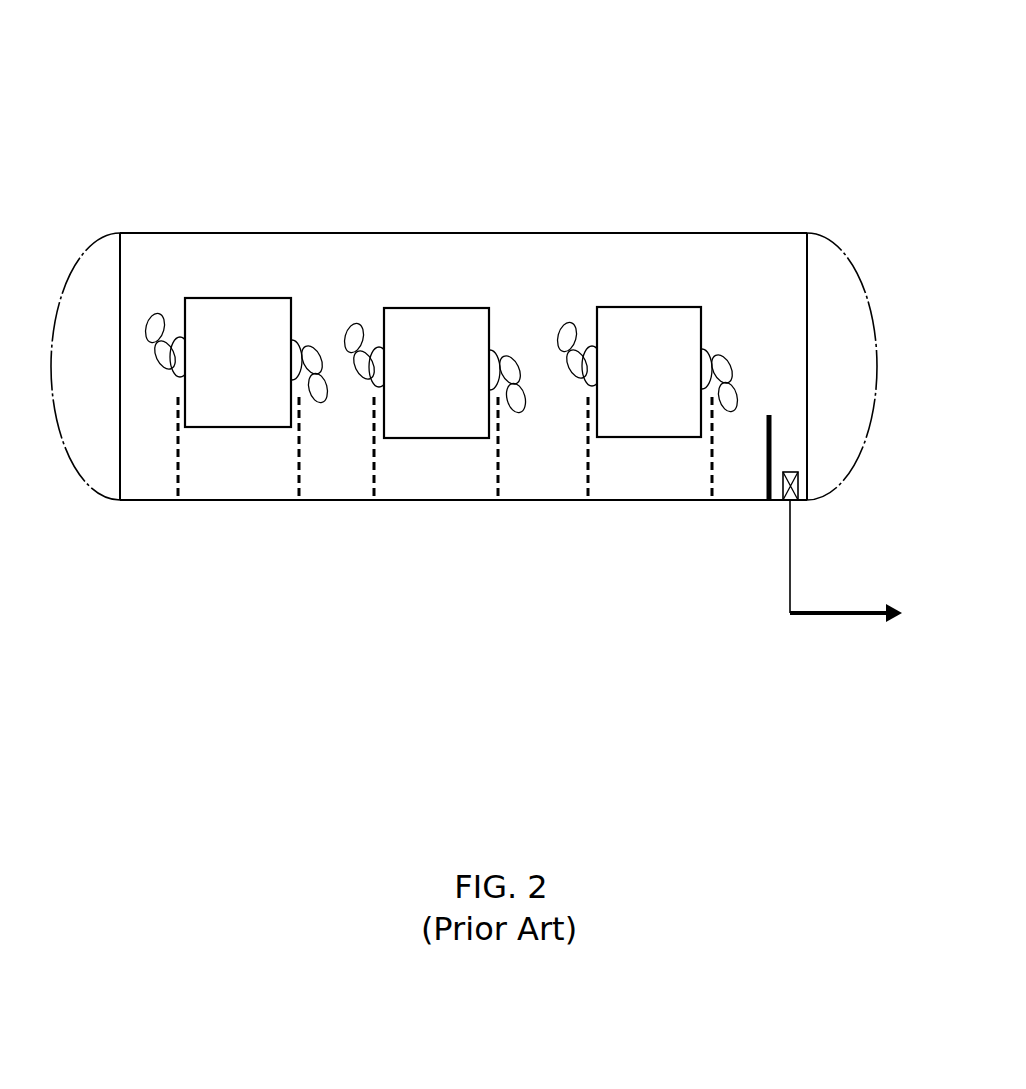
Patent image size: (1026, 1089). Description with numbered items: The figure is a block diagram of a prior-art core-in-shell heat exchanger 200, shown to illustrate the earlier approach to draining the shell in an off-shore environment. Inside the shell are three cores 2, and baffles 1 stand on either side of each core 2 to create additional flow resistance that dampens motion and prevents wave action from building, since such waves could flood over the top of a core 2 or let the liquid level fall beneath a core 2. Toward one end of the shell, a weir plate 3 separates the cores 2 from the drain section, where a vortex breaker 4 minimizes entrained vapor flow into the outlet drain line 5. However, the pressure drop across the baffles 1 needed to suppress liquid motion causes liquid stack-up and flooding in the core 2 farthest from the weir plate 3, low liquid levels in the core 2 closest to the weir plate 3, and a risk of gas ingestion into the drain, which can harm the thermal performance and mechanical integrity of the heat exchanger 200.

The core-in-shell heat exchanger 200 is at (100, 124).
The baffles 1 is at (177, 500).
The cores 2 is at (238, 427).
The weir plate 3 is at (768, 468).
The vortex breaker 4 is at (785, 502).
The outlet drain line 5 is at (808, 615).